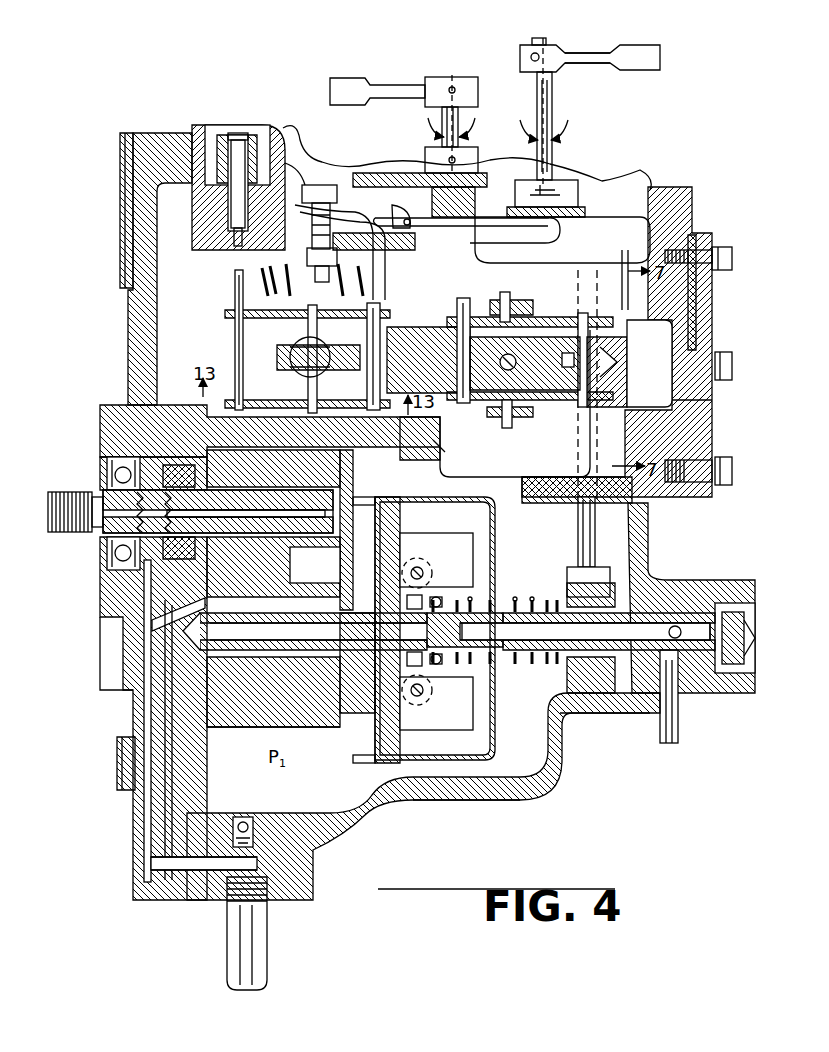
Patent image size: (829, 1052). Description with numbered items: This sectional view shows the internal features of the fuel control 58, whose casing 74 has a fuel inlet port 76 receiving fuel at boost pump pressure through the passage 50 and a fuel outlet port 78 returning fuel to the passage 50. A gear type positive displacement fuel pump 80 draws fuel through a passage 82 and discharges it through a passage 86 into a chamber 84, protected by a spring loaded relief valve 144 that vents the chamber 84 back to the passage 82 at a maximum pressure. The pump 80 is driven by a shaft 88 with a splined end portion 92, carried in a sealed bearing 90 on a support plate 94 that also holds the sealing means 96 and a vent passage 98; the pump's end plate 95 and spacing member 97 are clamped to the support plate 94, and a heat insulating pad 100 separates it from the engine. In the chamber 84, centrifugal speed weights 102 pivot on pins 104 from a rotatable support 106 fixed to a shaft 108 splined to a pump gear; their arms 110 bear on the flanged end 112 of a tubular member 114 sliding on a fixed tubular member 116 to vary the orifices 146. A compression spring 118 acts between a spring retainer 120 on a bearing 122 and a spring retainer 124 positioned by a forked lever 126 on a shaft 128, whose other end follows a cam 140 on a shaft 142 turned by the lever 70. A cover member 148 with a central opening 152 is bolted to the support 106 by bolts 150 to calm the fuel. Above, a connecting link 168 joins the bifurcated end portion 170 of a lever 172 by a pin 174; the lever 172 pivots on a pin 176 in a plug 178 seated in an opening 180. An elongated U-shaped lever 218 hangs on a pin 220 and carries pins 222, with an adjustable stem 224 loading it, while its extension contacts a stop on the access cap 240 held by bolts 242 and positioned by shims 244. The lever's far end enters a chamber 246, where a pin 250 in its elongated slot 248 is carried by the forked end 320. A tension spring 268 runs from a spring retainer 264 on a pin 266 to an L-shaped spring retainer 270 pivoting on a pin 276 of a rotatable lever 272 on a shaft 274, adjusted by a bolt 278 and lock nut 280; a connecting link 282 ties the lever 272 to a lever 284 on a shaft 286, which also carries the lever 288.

The passage 50 is at (673, 731).
The fuel control 58 is at (602, 725).
The lever 70 is at (345, 82).
The casing 74 is at (482, 790).
The fuel inlet port 76 is at (220, 888).
The fuel outlet port 78 is at (695, 690).
The gear type positive displacement fuel pump 80 is at (227, 720).
The passage 82 is at (172, 771).
The chamber 84 is at (345, 789).
The passage 86 is at (325, 576).
The shaft 88 is at (137, 517).
The sealed bearing 90 is at (107, 458).
The splined end portion 92 is at (67, 500).
The support plate 94 is at (117, 423).
The end plate 95 is at (307, 733).
The sealing means 96 is at (177, 464).
The spacing member 97 is at (247, 733).
The passage 98 is at (147, 838).
The heat insulating pad 100 is at (120, 213).
The centrifugal speed weights 102 is at (423, 543).
The pins 104 is at (430, 574).
The rotatable support 106 is at (373, 742).
The shaft 108 is at (233, 647).
The arms 110 is at (357, 618).
The flanged end 112 is at (415, 628).
The tubular member 114 is at (497, 597).
The tubular member 116 is at (532, 653).
The compression spring 118 is at (527, 597).
The spring retainer 120 is at (428, 668).
The bearing 122 is at (430, 693).
The spring retainer 124 is at (570, 600).
The forked lever 126 is at (648, 580).
The shaft 128 is at (610, 262).
The cam 140 is at (378, 173).
The shaft 142 is at (450, 77).
The spring loaded relief valve 144 is at (257, 814).
The orifices 146 is at (512, 655).
The cover member 148 is at (492, 755).
The bolts 150 is at (390, 503).
The central opening 152 is at (487, 585).
The connecting link 168 is at (568, 368).
The bifurcated end portion 170 is at (608, 363).
The lever 172 is at (463, 351).
The pin 174 is at (577, 305).
The pin 176 is at (373, 375).
The plug 178 is at (447, 422).
The opening 180 is at (440, 447).
The elongated U-shaped lever 218 is at (712, 401).
The pin 220 is at (462, 300).
The pin 222 is at (462, 300).
The adjustable stem 224 is at (512, 360).
The access cap 240 is at (712, 330).
The bolts 242 is at (730, 256).
The shims 244 is at (690, 248).
The chamber 246 is at (218, 274).
The elongated slot 248 is at (285, 356).
The pin 250 is at (313, 388).
The spring retainer 264 is at (232, 296).
The pin 266 is at (238, 341).
The tension spring 268 is at (283, 290).
The L-shaped spring retainer 270 is at (352, 210).
The rotatable lever 272 is at (287, 130).
The shaft 274 is at (238, 133).
The pin 276 is at (403, 214).
The bolt 278 is at (305, 185).
The lock nut 280 is at (310, 258).
The connecting link 282 is at (475, 220).
The lever 284 is at (585, 212).
The shaft 286 is at (548, 46).
The lever 288 is at (597, 70).
The forked end 320 is at (300, 342).